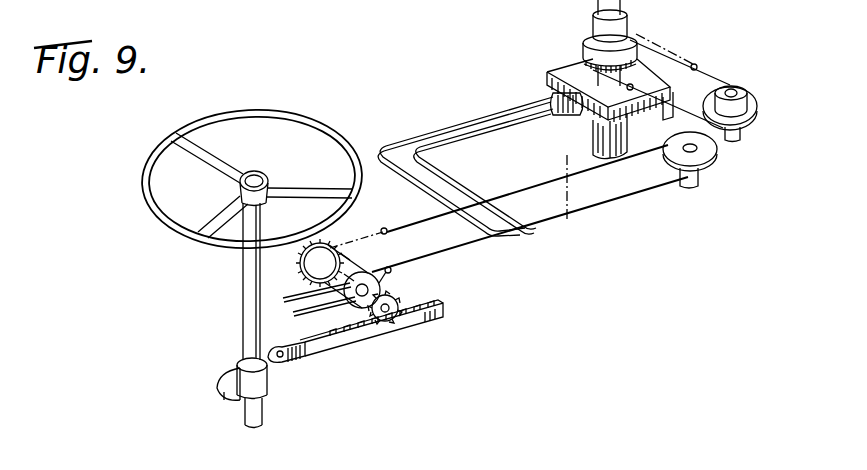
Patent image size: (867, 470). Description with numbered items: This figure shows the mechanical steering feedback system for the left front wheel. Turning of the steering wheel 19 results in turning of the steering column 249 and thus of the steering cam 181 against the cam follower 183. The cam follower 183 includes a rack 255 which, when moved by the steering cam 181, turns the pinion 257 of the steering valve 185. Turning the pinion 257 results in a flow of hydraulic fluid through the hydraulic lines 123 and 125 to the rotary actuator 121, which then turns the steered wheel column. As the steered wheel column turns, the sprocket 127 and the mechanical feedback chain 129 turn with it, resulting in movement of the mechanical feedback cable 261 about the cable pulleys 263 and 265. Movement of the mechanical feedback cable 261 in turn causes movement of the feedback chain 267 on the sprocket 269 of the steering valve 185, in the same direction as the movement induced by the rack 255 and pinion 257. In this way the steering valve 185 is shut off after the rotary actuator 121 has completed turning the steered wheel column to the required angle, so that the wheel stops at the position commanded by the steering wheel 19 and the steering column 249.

The steering wheel 19 is at (252, 114).
The steering column 249 is at (242, 296).
The steering cam 181 is at (232, 368).
The cam follower 183 is at (322, 358).
The rack 255 is at (420, 305).
The pinion 257 is at (362, 316).
The sprocket 269 is at (300, 273).
The steering valve 185 is at (356, 258).
The feedback chain 267 is at (353, 233).
The hydraulic line 123 is at (480, 121).
The hydraulic line 125 is at (494, 130).
The mechanical feedback cable 261 is at (567, 222).
The rotary actuator 121 is at (662, 72).
The sprocket 127 is at (588, 40).
The mechanical feedback chain 129 is at (660, 46).
The cable pulley 263 is at (760, 102).
The cable pulley 265 is at (718, 156).